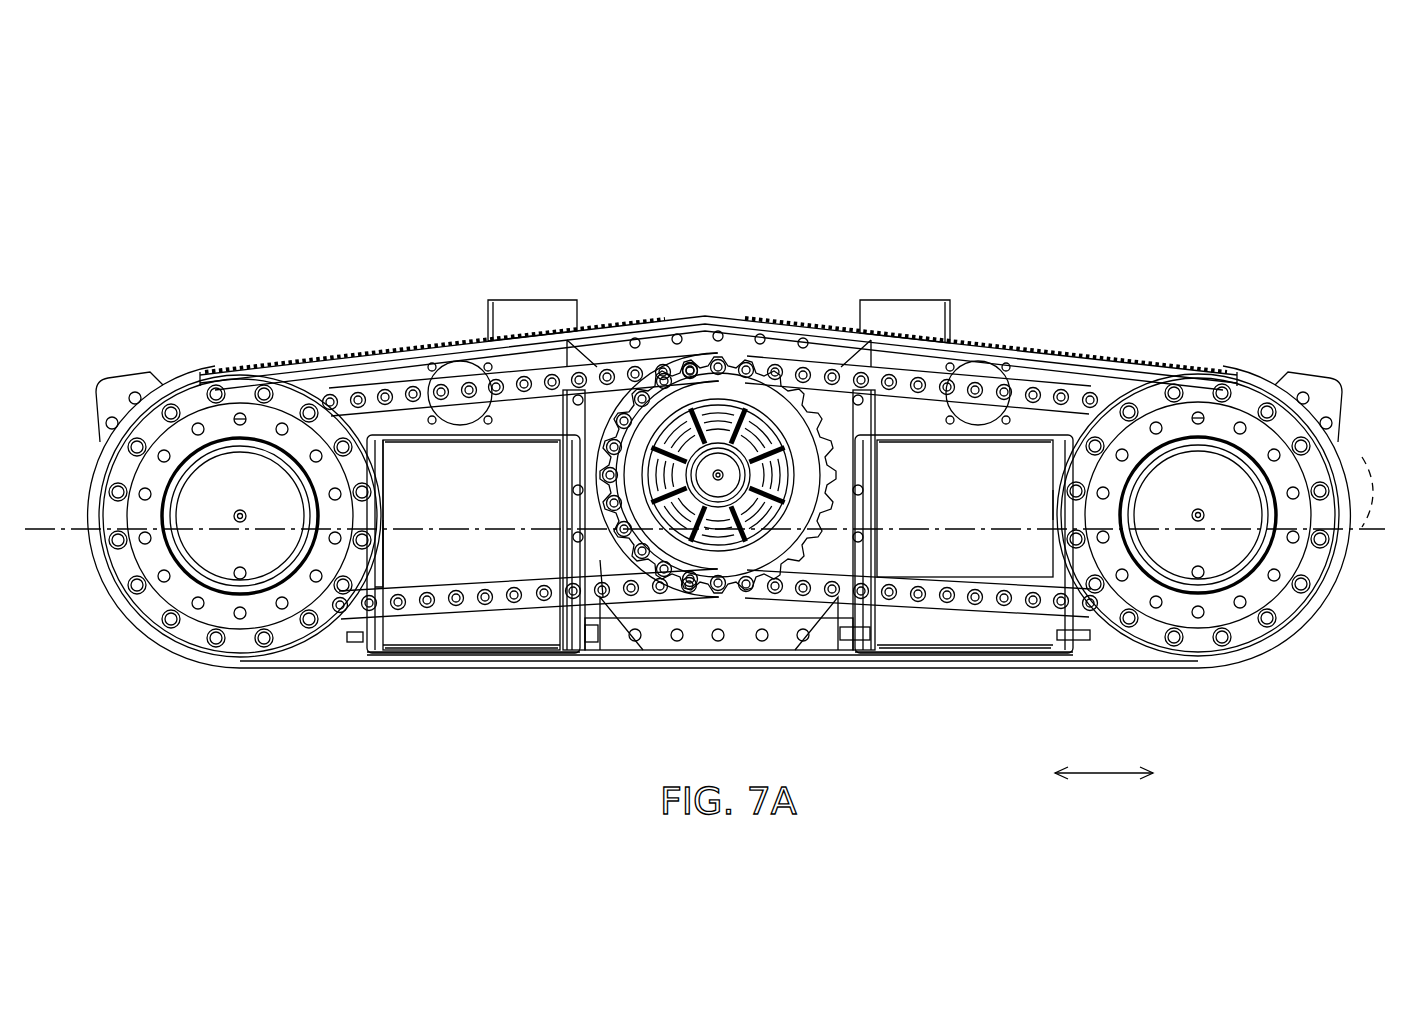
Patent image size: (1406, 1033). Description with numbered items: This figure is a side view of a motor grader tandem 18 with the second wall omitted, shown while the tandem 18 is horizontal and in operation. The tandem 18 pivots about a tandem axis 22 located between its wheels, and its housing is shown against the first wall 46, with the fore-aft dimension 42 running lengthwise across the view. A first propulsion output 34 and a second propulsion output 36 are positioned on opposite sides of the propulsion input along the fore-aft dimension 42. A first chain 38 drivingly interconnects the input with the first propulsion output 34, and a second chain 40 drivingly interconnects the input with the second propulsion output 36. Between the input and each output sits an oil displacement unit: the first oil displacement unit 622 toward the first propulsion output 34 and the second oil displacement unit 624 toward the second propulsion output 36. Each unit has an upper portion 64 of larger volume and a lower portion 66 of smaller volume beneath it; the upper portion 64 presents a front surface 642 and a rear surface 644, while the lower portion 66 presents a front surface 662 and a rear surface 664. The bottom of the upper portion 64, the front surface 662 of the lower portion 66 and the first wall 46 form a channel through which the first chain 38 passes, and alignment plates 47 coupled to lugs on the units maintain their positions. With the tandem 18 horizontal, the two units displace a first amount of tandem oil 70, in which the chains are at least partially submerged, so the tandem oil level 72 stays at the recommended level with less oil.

The tandem 18 is at (700, 168).
The tandem axis 22 is at (688, 372).
The first propulsion output 34 is at (189, 409).
The second propulsion output 36 is at (1251, 410).
The first chain 38 is at (628, 594).
The second chain 40 is at (808, 594).
The fore-aft dimension 42 is at (1117, 772).
The first wall 46 is at (1113, 383).
The alignment plate 47 is at (382, 538).
The upper portion 64 is at (412, 476).
The lower portion 66 is at (452, 628).
The tandem oil 70 is at (610, 592).
The tandem oil level 72 is at (1379, 475).
The first oil displacement unit 622 is at (500, 628).
The second oil displacement unit 624 is at (968, 630).
The front surface 642 is at (978, 491).
The rear surface 644 is at (528, 501).
The front surface 662 is at (928, 641).
The rear surface 664 is at (522, 606).